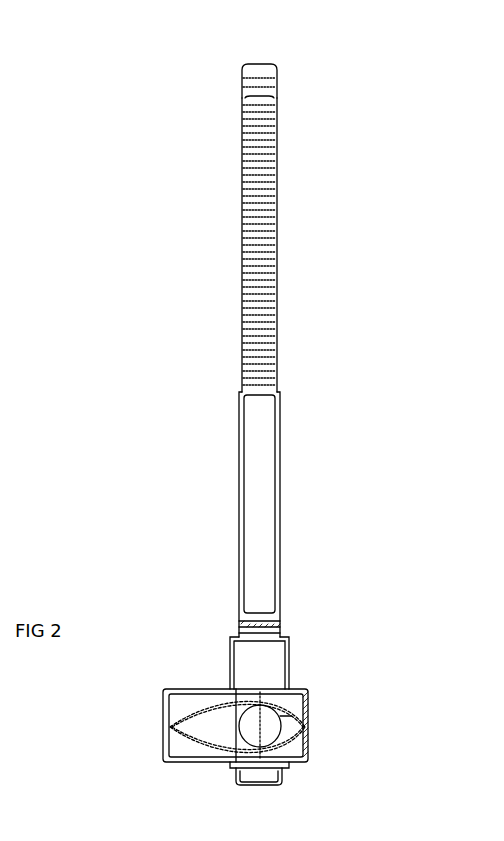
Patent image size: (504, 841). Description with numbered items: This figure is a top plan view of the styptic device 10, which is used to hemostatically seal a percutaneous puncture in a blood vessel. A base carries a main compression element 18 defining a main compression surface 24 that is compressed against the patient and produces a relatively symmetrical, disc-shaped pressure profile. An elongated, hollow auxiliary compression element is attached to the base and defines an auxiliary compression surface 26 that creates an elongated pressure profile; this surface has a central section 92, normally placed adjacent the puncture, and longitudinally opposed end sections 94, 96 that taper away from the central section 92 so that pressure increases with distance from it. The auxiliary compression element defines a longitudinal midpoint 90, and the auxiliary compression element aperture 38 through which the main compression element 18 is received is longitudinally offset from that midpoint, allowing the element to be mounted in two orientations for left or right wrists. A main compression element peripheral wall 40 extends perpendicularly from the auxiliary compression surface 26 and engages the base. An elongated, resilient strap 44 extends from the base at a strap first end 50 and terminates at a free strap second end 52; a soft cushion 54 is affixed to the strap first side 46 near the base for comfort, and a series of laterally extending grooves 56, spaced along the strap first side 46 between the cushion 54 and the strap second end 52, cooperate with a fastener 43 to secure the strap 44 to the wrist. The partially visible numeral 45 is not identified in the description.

The styptic device 10 is at (326, 72).
The strap second end 52 is at (262, 64).
The strap first side 46 is at (270, 83).
The grooves 56 is at (270, 166).
The strap 44 is at (234, 369).
The cushion 54 is at (265, 425).
The strap first end 50 is at (281, 633).
The central section 92 is at (247, 699).
The longitudinal midpoint 90 is at (236, 697).
The main compression element peripheral wall 40 is at (185, 688).
The end section 96 is at (172, 727).
The auxiliary compression surface 26 is at (221, 731).
The main compression surface 24 is at (271, 730).
The main compression element 18 is at (283, 711).
The auxiliary compression element aperture 38 is at (253, 711).
The end section 94 is at (292, 725).
The fastener 43 is at (252, 792).
The cover 45 is at (49, 835).